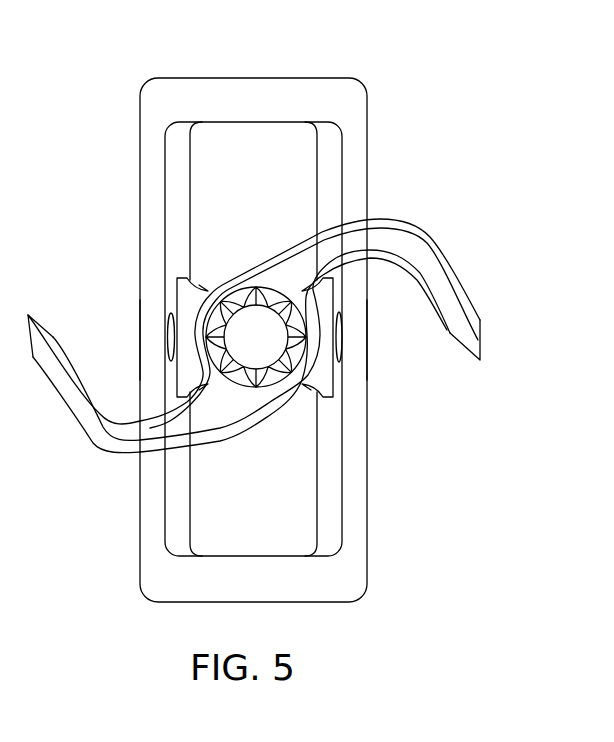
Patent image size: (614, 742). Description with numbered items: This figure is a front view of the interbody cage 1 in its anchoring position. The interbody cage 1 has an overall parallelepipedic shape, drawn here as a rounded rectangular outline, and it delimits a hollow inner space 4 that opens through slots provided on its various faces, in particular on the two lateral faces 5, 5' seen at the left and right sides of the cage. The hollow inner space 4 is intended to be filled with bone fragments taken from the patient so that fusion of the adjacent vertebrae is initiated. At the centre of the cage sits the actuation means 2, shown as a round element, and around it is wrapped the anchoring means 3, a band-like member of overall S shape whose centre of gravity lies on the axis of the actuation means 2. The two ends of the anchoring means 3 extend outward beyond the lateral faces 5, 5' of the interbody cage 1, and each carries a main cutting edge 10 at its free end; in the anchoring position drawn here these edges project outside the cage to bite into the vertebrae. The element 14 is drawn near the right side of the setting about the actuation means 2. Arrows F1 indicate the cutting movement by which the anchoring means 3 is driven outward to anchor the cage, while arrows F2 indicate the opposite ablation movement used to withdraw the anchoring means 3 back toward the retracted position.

The interbody cage 1 is at (150, 48).
The actuation means 2 is at (258, 362).
The anchoring means 3 is at (108, 368).
The hollow inner space 4 is at (214, 203).
The lateral face 5 is at (114, 229).
The lateral face 5' is at (209, 225).
The main cutting edge 10 is at (28, 315).
The gem setting 14 is at (268, 332).
The cutting movement arrows F1 is at (32, 392).
The ablation movement arrows F2 is at (45, 422).